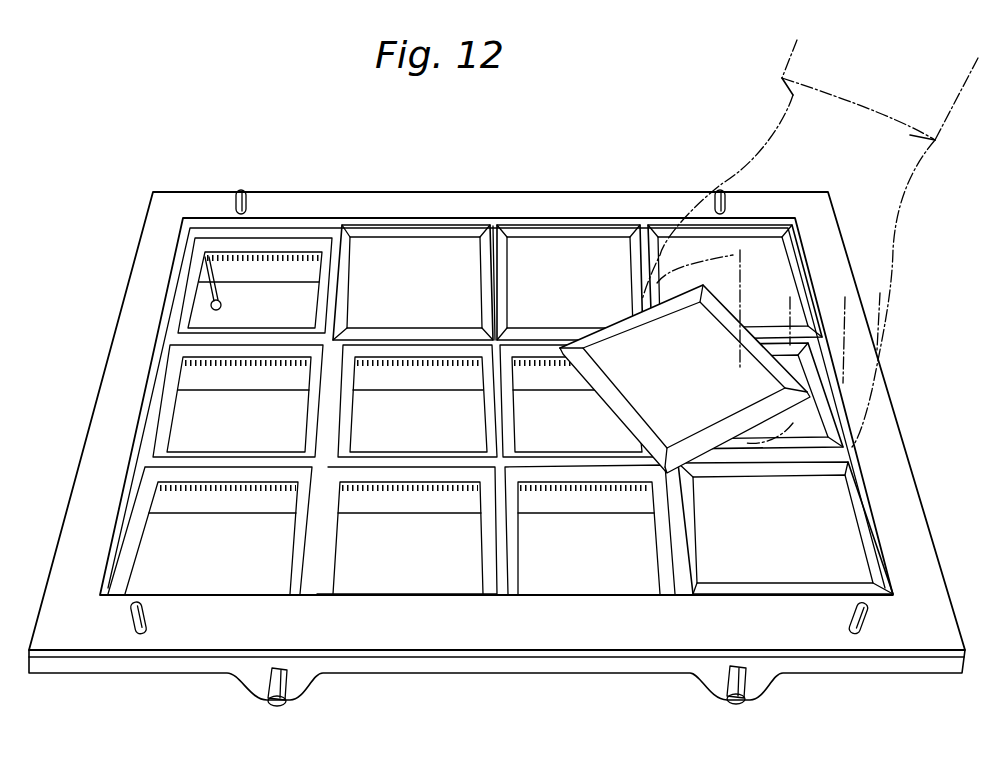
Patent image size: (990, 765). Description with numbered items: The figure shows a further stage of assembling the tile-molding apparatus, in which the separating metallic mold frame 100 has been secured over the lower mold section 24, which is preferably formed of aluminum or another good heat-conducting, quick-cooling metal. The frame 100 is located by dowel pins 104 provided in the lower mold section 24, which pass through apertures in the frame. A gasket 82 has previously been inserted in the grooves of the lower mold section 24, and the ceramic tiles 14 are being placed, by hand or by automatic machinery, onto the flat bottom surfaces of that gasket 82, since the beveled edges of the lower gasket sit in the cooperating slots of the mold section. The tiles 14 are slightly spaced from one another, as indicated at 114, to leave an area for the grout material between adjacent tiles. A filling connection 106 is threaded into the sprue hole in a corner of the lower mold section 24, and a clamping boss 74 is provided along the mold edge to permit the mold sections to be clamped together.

The tiles 14 is at (424, 246).
The lower mold section 24 is at (552, 666).
The clamping boss 74 is at (760, 684).
The gasket 82 is at (316, 550).
The mold frame 100 is at (560, 607).
The dowel pins 104 is at (244, 190).
The filling connection 106 is at (222, 305).
The spacing 114 is at (497, 232).